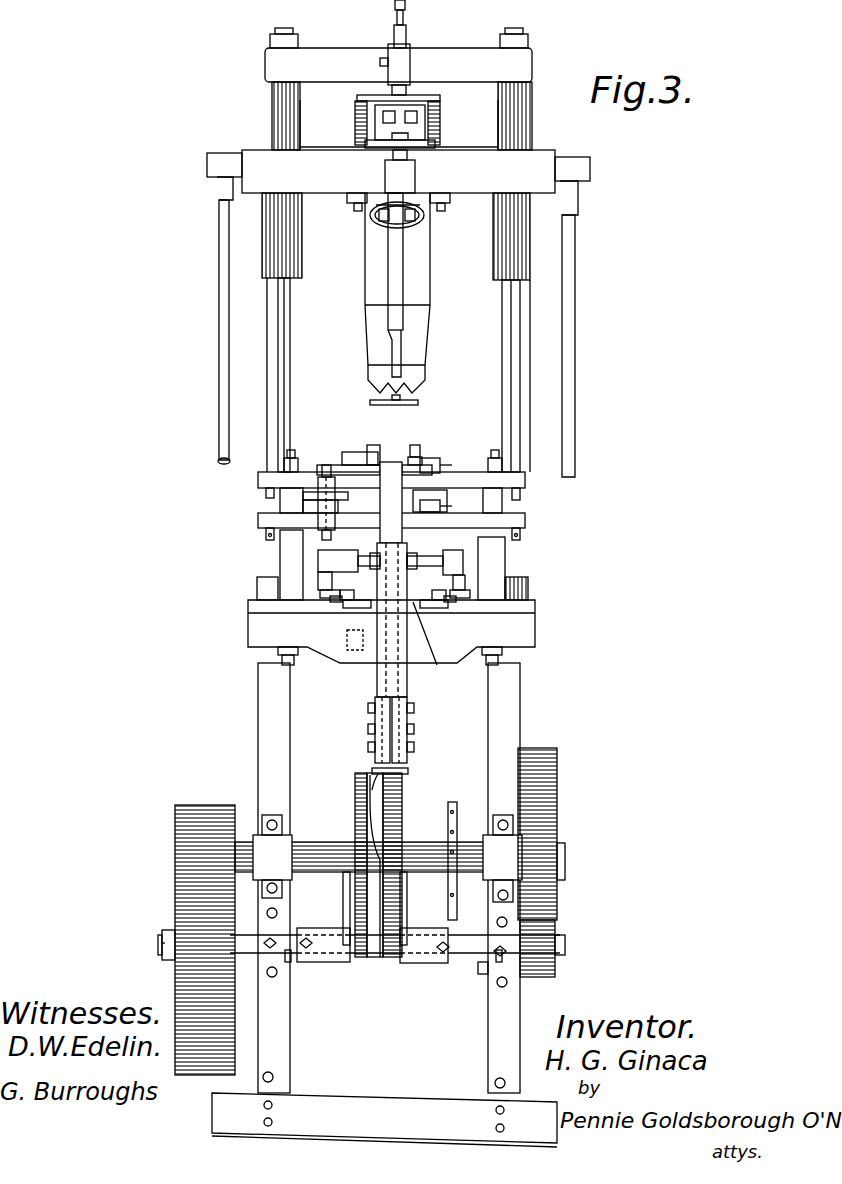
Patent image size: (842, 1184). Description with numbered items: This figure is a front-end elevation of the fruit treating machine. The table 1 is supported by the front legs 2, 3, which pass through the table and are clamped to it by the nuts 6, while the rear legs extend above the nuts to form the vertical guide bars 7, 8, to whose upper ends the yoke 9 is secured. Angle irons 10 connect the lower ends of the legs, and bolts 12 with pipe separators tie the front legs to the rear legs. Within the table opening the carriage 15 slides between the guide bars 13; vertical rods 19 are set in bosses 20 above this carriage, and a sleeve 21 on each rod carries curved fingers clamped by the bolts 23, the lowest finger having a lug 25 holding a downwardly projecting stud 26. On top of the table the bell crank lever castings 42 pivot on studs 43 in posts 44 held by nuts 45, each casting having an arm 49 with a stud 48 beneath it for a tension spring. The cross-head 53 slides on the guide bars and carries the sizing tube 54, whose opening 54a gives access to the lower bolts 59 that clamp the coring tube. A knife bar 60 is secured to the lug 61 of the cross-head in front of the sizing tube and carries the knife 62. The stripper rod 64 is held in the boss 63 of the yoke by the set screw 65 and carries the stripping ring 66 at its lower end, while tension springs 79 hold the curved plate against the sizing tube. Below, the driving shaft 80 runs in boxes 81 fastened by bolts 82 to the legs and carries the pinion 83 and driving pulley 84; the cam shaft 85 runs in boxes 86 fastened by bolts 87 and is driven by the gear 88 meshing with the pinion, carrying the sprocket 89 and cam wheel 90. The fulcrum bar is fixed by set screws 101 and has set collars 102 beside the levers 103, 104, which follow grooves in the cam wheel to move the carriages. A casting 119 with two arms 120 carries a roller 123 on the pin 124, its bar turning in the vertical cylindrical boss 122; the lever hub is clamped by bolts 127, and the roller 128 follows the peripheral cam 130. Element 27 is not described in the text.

The table 1 is at (330, 652).
The front leg 2 is at (520, 1003).
The front leg 3 is at (290, 1028).
The nut 6 is at (257, 585).
The vertical guide bar 7 is at (520, 384).
The vertical guide bar 8 is at (290, 368).
The yoke 9 is at (465, 60).
The angle iron 10 is at (345, 1112).
The bolt 12 is at (273, 1075).
The guide bar 13 is at (352, 584).
The carriage 15 is at (365, 609).
The vertical rod 19 is at (400, 440).
The boss 20 is at (432, 644).
The sleeve 21 is at (402, 540).
The bolt 23 is at (440, 462).
The lug 25 is at (318, 560).
The stud 26 is at (318, 578).
The foot 27 is at (322, 592).
The bell crank lever casting 42 is at (455, 484).
The stud 43 is at (288, 456).
The post 44 is at (280, 560).
The nut 45 is at (280, 658).
The stud 48 is at (266, 492).
The arm 49 is at (262, 474).
The cross-head 53 is at (340, 165).
The sizing tube 54 is at (425, 285).
The opening 54a is at (410, 228).
The bolt 59 is at (438, 110).
The knife bar 60 is at (396, 318).
The lug 61 is at (402, 170).
The knife 62 is at (392, 355).
The boss 63 is at (404, 62).
The stripper rod 64 is at (409, 50).
The set screw 65 is at (383, 60).
The stripping ring 66 is at (418, 402).
The tension spring 79 is at (355, 122).
The driving shaft 80 is at (162, 940).
The box 81 is at (483, 972).
The bolt 82 is at (266, 970).
The pinion 83 is at (555, 970).
The driving pulley 84 is at (175, 845).
The cam shaft 85 is at (320, 836).
The box 86 is at (280, 815).
The bolt 87 is at (268, 820).
The gear 88 is at (557, 790).
The sprocket 89 is at (448, 808).
The cam wheel 90 is at (383, 830).
The set screw 101 is at (290, 962).
The set collar 102 is at (305, 962).
The lever 103 is at (407, 900).
The lever 104 is at (343, 890).
The casting 119 is at (420, 460).
The arm 120 is at (348, 490).
The vertical cylindrical boss 122 is at (377, 685).
The roller 123 is at (300, 497).
The pin 124 is at (328, 465).
The bolt 127 is at (414, 746).
The roller 128 is at (408, 771).
The cam 130 is at (372, 773).